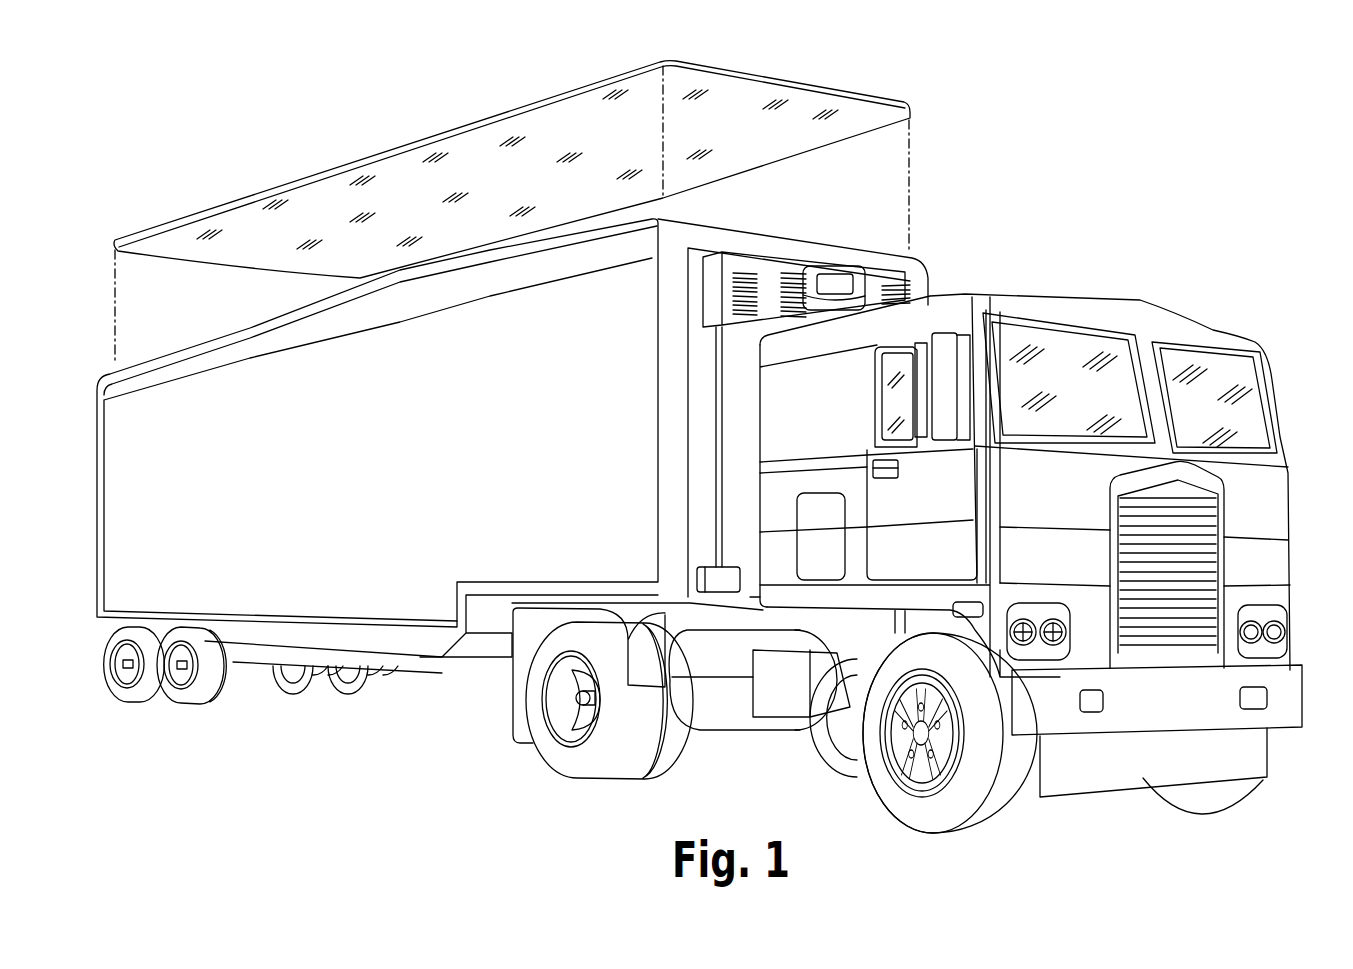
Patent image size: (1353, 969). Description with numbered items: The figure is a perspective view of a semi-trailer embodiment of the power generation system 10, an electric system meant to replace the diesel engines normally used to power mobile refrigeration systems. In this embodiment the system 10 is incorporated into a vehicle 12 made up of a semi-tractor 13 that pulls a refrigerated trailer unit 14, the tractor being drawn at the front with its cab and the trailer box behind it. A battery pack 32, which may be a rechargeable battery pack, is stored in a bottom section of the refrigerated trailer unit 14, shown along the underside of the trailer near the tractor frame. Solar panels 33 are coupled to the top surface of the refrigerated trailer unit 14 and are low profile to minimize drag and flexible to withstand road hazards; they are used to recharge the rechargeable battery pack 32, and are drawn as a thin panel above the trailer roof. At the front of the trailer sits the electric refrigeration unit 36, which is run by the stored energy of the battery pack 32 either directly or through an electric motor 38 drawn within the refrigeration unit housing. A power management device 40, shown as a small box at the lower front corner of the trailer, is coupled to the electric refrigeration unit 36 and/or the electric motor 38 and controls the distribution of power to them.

The power generation system 10 is at (1181, 138).
The vehicle 12 is at (1176, 294).
The semi-tractor 13 is at (1293, 551).
The refrigerated trailer unit 14 is at (98, 532).
The battery pack 32 is at (484, 666).
The solar panels 33 is at (414, 137).
The electric refrigeration unit 36 is at (848, 230).
The electric motor 38 is at (836, 280).
The power management device 40 is at (705, 578).